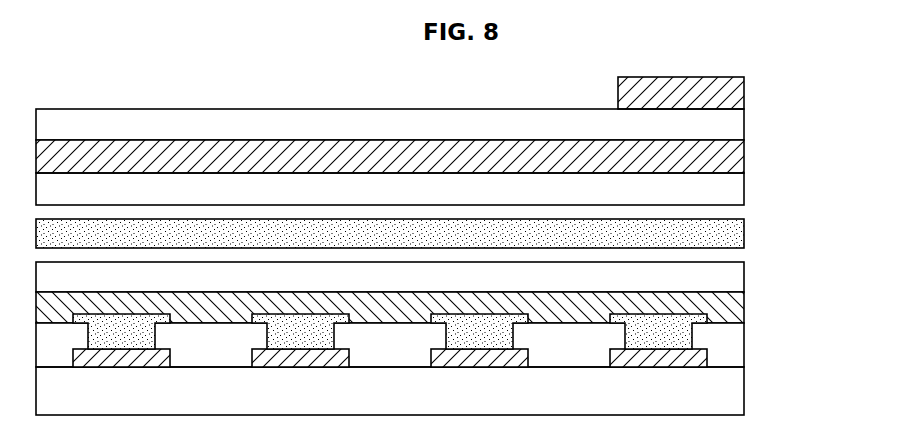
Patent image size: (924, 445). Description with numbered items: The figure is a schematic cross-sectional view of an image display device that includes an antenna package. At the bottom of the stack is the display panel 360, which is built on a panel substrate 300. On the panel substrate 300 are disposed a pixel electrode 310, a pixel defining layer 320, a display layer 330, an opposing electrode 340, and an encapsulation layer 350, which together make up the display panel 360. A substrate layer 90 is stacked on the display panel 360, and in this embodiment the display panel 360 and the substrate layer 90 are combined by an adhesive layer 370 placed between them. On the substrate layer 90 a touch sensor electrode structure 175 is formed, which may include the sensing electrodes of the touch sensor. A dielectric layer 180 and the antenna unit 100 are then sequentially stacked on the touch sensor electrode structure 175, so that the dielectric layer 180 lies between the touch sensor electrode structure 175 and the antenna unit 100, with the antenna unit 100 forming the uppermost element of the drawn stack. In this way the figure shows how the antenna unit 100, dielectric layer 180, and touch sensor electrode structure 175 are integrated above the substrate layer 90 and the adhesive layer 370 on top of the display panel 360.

The antenna unit 100 is at (744, 88).
The dielectric layer 180 is at (737, 120).
The touch sensor electrode structure 175 is at (745, 152).
The substrate layer 90 is at (738, 183).
The adhesive layer 370 is at (738, 238).
The display panel 360 is at (470, 329).
The encapsulation layer 350 is at (745, 278).
The opposing electrode 340 is at (745, 305).
The display layer 330 is at (675, 305).
The pixel defining layer 320 is at (738, 335).
The pixel electrode 310 is at (708, 354).
The panel substrate 300 is at (738, 393).